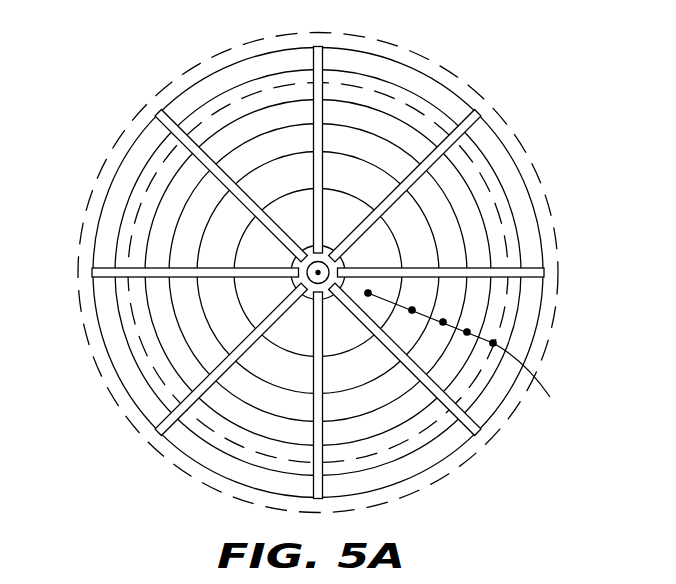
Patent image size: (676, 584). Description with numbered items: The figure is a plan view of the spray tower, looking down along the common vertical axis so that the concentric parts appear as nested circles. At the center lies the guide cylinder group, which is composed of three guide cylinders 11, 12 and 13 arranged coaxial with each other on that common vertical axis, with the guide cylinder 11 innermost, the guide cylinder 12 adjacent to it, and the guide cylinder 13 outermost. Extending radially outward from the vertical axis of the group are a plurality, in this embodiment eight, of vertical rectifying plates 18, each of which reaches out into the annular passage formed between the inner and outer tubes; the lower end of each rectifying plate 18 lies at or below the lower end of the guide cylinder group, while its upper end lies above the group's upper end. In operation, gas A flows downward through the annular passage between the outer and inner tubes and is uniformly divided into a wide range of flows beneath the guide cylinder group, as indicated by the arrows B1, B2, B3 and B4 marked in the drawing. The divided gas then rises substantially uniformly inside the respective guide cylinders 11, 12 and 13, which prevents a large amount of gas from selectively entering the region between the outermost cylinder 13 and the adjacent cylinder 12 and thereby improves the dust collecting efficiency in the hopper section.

The guide cylinder 11 is at (243, 228).
The guide cylinder 12 is at (200, 237).
The guide cylinder 13 is at (173, 310).
The rectifying plate 18 is at (325, 48).
The gas A is at (464, 355).
The arrow B1 is at (468, 332).
The arrow B2 is at (441, 323).
The arrow B3 is at (412, 307).
The arrow B4 is at (369, 290).